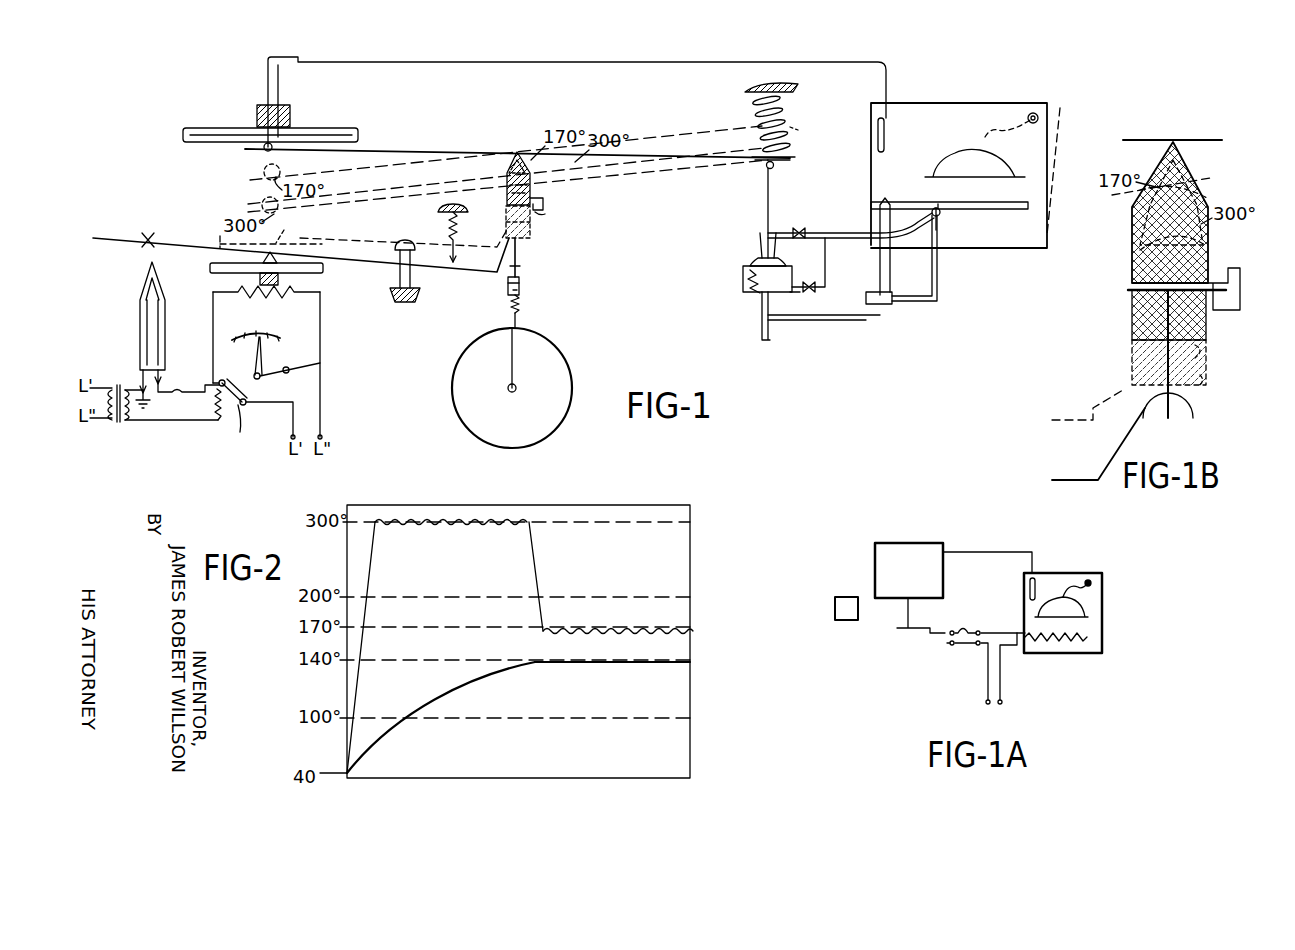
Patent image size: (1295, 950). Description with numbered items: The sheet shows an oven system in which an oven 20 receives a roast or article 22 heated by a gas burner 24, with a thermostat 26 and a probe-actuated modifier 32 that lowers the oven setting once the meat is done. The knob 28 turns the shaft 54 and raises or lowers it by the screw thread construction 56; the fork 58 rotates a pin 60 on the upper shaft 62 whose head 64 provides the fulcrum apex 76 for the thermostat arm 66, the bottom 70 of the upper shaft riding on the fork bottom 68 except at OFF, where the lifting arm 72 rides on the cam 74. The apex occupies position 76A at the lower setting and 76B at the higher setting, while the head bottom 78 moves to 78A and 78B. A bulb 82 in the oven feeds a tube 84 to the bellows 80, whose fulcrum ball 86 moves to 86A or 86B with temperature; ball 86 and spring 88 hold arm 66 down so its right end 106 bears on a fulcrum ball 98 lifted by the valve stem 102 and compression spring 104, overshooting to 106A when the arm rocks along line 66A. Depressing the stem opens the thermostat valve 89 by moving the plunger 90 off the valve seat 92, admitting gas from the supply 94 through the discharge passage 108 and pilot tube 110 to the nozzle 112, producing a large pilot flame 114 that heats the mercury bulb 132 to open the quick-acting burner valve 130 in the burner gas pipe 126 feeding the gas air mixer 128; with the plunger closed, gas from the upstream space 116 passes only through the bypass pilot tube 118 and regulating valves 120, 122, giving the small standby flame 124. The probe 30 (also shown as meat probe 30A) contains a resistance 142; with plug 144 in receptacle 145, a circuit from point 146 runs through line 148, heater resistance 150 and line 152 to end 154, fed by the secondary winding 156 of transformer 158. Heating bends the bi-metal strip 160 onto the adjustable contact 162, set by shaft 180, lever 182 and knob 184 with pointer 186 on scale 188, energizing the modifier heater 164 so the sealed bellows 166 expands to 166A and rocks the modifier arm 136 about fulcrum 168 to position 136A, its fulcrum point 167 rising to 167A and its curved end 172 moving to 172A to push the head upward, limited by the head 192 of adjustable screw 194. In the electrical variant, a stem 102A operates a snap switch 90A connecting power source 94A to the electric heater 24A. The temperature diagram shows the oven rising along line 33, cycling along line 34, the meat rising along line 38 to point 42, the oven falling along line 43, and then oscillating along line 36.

In FIG. 1, the oven 20 is at (947, 106).
In FIG. 1A, the oven 20 is at (1103, 602).
In FIG. 1, the article 22 is at (1010, 168).
In FIG. 1A, the article 22 is at (1080, 616).
In FIG. 1, the heating means 24 is at (992, 212).
In FIG. 1A, the electric heater system 24A is at (1083, 645).
In FIG. 1, the thermostatic means 26 is at (221, 85).
In FIG. 1A, the thermostatic means 26 is at (956, 582).
In FIG. 1, the thermostatic knob 28 is at (560, 353).
In FIG. 1, the probe 30 is at (989, 147).
In FIG. 1A, the probe 30 is at (1062, 596).
In FIG. 1, the meat probe 30A is at (162, 342).
In FIG. 1, the modifier 32 is at (344, 288).
In FIG. 1A, the modifier 32 is at (842, 621).
In FIG. 2, the oven temperature line 33 is at (368, 587).
In FIG. 2, the oven temperature line 34 is at (458, 527).
In FIG. 2, the oscillating line 36 is at (620, 636).
In FIG. 2, the meat temperature line 38 is at (426, 702).
In FIG. 2, the point 42 is at (533, 662).
In FIG. 2, the falling temperature line 43 is at (540, 576).
In FIG. 1, the shaft 54 is at (520, 324).
In FIG. 1, the screw thread construction 56 is at (521, 308).
In FIG. 1, the fork 58 is at (520, 289).
In FIG. 1, the pin 60 is at (521, 277).
In FIG. 1, the upper shaft 62 is at (518, 258).
In FIG. 1B, the upper shaft 62 is at (1166, 406).
In FIG. 1, the thermostat arm engaging head 64 is at (512, 158).
In FIG. 1B, the thermostat arm engaging head 64 is at (1162, 160).
In FIG. 1, the thermostat arm 66 is at (390, 151).
In FIG. 1B, the thermostat arm 66 is at (1206, 140).
In FIG. 1, the dotted line position of thermostat arm 66A is at (345, 179).
In FIG. 1B, the dotted line position of thermostat arm 66A is at (1211, 180).
In FIG. 1, the bottom of fork 68 is at (507, 295).
In FIG. 1, the bottom of upper shaft 70 is at (508, 287).
In FIG. 1, the lifting arm 72 is at (538, 204).
In FIG. 1B, the lifting arm 72 is at (1226, 276).
In FIG. 1, the cam 74 is at (546, 212).
In FIG. 1B, the cam 74 is at (1214, 312).
In FIG. 1, the apex 76 is at (520, 158).
In FIG. 1B, the apex 76 is at (1181, 150).
In FIG. 1B, the apex position 76A is at (1205, 196).
In FIG. 1, the apex position 76B is at (506, 196).
In FIG. 1B, the apex position 76B is at (1192, 244).
In FIG. 1B, the bottom of head 78 is at (1143, 300).
In FIG. 1B, the bottom position 78A is at (1130, 348).
In FIG. 1B, the bottom position 78B is at (1205, 387).
In FIG. 1, the diaphragm or bellows 80 is at (320, 131).
In FIG. 1, the bulb 82 is at (886, 141).
In FIG. 1A, the bulb 82 is at (1035, 578).
In FIG. 1, the tube 84 is at (553, 62).
In FIG. 1, the fulcrum ball 86 is at (283, 126).
In FIG. 1, the fulcrum ball position 86A is at (265, 170).
In FIG. 1, the fulcrum ball position 86B is at (263, 203).
In FIG. 1, the spring 88 is at (752, 108).
In FIG. 1, the thermostat valve 89 is at (719, 265).
In FIG. 1, the valve plunger 90 is at (743, 277).
In FIG. 1, the valve seat 92 is at (778, 250).
In FIG. 1, the supply 94 is at (770, 337).
In FIG. 1, the fulcrum ball 98 is at (773, 170).
In FIG. 1, the valve stem 102 is at (766, 191).
In FIG. 1A, the stem 102A is at (910, 613).
In FIG. 1, the compression spring 104 is at (748, 290).
In FIG. 1, the right end of thermostat arm 106 is at (789, 160).
In FIG. 1, the overshoot position 106A is at (792, 128).
In FIG. 1, the discharge passage 108 is at (760, 258).
In FIG. 1, the pilot tube 110 is at (800, 228).
In FIG. 1, the pilot nozzle 112 is at (930, 236).
In FIG. 1, the large pilot flame 114 is at (940, 206).
In FIG. 1, the upstream gas space 116 is at (779, 294).
In FIG. 1, the bypass pilot tube 118 is at (828, 271).
In FIG. 1, the regulating valve 120 is at (812, 232).
In FIG. 1, the regulating valve 122 is at (817, 293).
In FIG. 1, the small standby flame 124 is at (932, 215).
In FIG. 1, the burner gas pipe 126 is at (862, 321).
In FIG. 1, the gas air mixer 128 is at (889, 206).
In FIG. 1, the burner valve 130 is at (892, 303).
In FIG. 1, the mercury bulb 132 is at (942, 226).
In FIG. 1, the modifier arm 136 is at (343, 261).
In FIG. 1B, the modifier arm 136 is at (1086, 480).
In FIG. 1, the energized position of modifier arm 136A is at (354, 243).
In FIG. 1B, the energized position of modifier arm 136A is at (1094, 408).
In FIG. 1, the resistance 142 is at (138, 288).
In FIG. 1, the connector plug 144 is at (158, 380).
In FIG. 1, the connector receptacle 145 is at (162, 379).
In FIG. 1, the circuit start 146 is at (138, 388).
In FIG. 1, the line 148 is at (170, 394).
In FIG. 1, the heater resistance 150 is at (226, 418).
In FIG. 1, the line 152 is at (190, 425).
In FIG. 1, the end 154 is at (115, 422).
In FIG. 1, the secondary winding 156 is at (129, 416).
In FIG. 1, the transformer 158 is at (113, 388).
In FIG. 1, the bi-metal strip 160 is at (241, 434).
In FIG. 1, the adjustable contact 162 is at (244, 406).
In FIG. 1, the modifier heater 164 is at (268, 297).
In FIG. 1, the sealed bellows 166 is at (210, 268).
In FIG. 1, the expanded bellows position 166A is at (218, 240).
In FIG. 1, the fulcrum point of lever 167 is at (273, 255).
In FIG. 1, the raised fulcrum point position 167A is at (305, 226).
In FIG. 1, the fulcrum 168 is at (146, 243).
In FIG. 1, the curved end 172 is at (500, 246).
In FIG. 1B, the curved end 172 is at (1190, 408).
In FIG. 1, the raised curved end position 172A is at (532, 229).
In FIG. 1B, the raised curved end position 172A is at (1206, 351).
In FIG. 1, the rotatable shaft 180 is at (222, 380).
In FIG. 1, the adjustable lever 182 is at (246, 398).
In FIG. 1, the knob 184 is at (314, 362).
In FIG. 1, the pointer 186 is at (264, 352).
In FIG. 1, the temperature scale 188 is at (250, 334).
In FIG. 1, the head of adjustable screw 192 is at (406, 241).
In FIG. 1, the adjustable screw 194 is at (414, 290).
In FIG. 1A, the snap switch 90A is at (960, 648).
In FIG. 1A, the electrical power source 94A is at (997, 692).